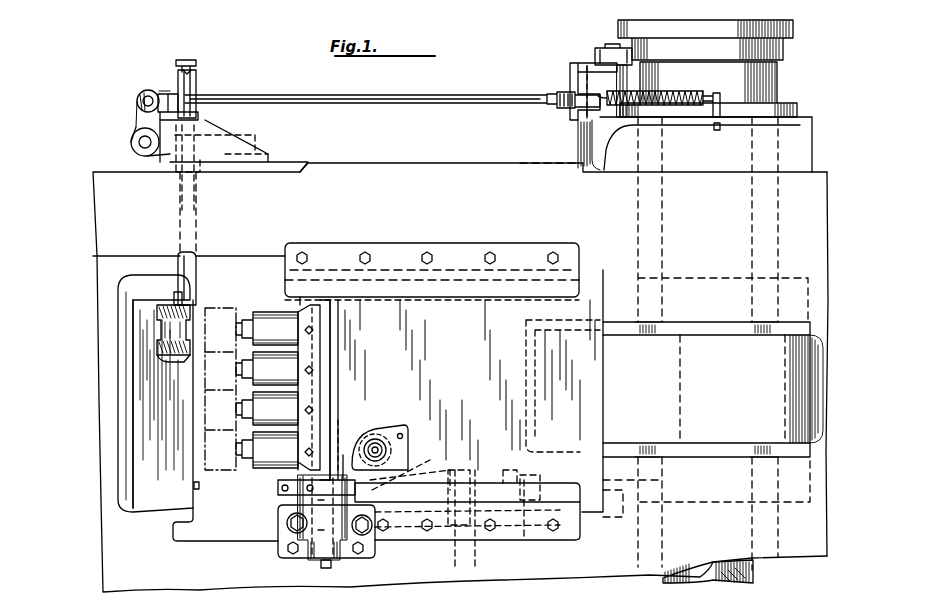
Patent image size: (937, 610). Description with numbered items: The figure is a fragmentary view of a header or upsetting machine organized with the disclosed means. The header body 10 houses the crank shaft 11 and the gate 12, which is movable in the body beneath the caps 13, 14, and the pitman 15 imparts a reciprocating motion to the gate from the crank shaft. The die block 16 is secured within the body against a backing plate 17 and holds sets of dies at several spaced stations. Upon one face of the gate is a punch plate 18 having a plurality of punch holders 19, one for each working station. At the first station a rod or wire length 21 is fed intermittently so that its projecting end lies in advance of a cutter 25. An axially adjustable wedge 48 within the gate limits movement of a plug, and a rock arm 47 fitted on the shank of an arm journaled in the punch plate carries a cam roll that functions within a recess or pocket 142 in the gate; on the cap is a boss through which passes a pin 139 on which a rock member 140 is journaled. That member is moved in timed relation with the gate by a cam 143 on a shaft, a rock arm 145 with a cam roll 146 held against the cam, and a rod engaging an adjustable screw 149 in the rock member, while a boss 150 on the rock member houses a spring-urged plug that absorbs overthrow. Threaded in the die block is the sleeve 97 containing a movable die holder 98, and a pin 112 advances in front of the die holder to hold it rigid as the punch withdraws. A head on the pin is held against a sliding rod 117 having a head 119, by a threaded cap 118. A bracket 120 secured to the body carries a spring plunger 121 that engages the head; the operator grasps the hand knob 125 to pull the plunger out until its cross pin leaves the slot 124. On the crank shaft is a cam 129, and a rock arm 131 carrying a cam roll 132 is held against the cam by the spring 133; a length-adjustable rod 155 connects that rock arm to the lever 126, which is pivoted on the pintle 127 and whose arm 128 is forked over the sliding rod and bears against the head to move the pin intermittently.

The header body 10 is at (357, 172).
The crank shaft 11 is at (722, 580).
The gate 12 is at (603, 270).
The cap 13 is at (75, 143).
The cap 14 is at (568, 532).
The pitman 15 is at (713, 389).
The die block 16 is at (143, 485).
The backing plate 17 is at (125, 462).
The punch plate 18 is at (322, 353).
The punch holder 19 is at (254, 447).
The rod or wire length 21 is at (199, 485).
The cutter 25 is at (200, 520).
The rock arm 47 is at (333, 418).
The wedge 48 is at (375, 445).
The sleeve 97 is at (181, 357).
The die holder 98 is at (192, 318).
The pin 112 is at (192, 302).
The sliding rod 117 is at (198, 264).
The threaded cap 118 is at (178, 298).
The head 119 is at (220, 132).
The bracket 120 is at (200, 105).
The spring plunger 121 is at (178, 70).
The slot 124 is at (198, 80).
The hand knob 125 is at (178, 60).
The lever 126 is at (137, 112).
The pintle 127 is at (136, 138).
The arm 128 is at (172, 163).
The cam 129 is at (783, 55).
The rock arm 131 is at (570, 74).
The cam roll 132 is at (593, 52).
The spring 133 is at (680, 90).
The pin 139 is at (326, 580).
The rock member 140 is at (302, 558).
The recess or pocket 142 is at (343, 455).
The cam 143 is at (662, 480).
The rock arm 145 is at (444, 540).
The cam roll 146 is at (524, 540).
The adjustable screw 149 is at (368, 532).
The boss 150 is at (282, 535).
The rod 155 is at (480, 98).